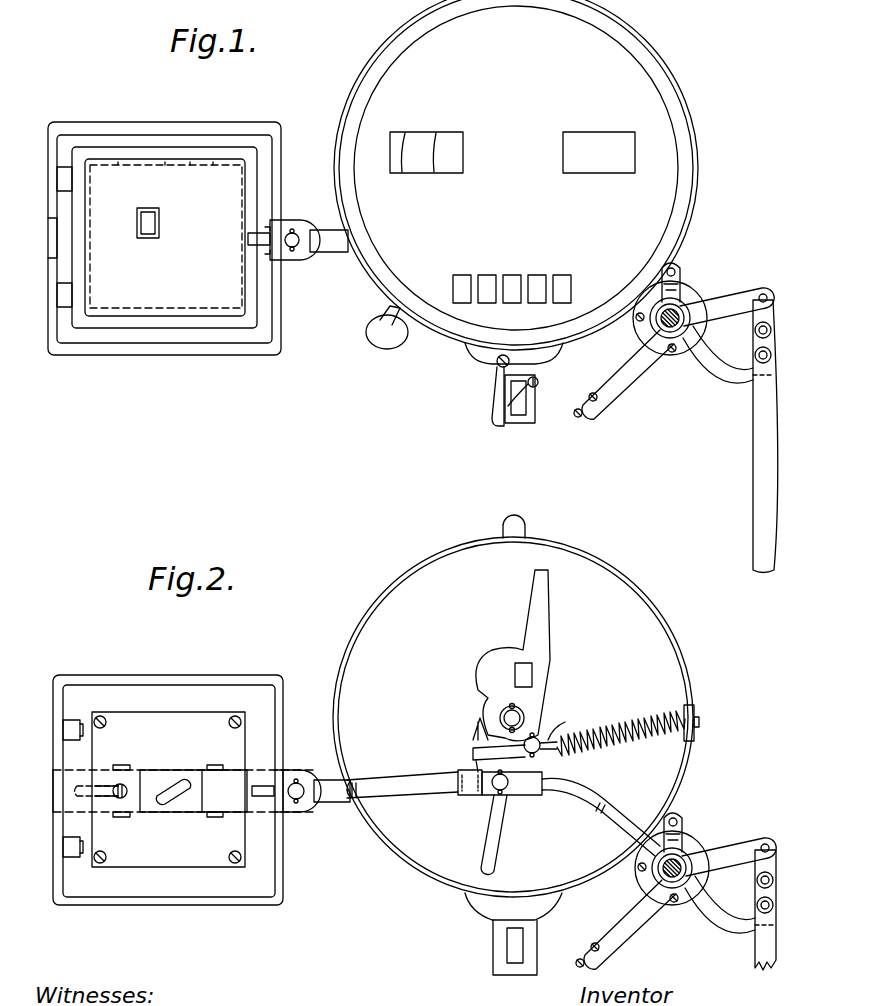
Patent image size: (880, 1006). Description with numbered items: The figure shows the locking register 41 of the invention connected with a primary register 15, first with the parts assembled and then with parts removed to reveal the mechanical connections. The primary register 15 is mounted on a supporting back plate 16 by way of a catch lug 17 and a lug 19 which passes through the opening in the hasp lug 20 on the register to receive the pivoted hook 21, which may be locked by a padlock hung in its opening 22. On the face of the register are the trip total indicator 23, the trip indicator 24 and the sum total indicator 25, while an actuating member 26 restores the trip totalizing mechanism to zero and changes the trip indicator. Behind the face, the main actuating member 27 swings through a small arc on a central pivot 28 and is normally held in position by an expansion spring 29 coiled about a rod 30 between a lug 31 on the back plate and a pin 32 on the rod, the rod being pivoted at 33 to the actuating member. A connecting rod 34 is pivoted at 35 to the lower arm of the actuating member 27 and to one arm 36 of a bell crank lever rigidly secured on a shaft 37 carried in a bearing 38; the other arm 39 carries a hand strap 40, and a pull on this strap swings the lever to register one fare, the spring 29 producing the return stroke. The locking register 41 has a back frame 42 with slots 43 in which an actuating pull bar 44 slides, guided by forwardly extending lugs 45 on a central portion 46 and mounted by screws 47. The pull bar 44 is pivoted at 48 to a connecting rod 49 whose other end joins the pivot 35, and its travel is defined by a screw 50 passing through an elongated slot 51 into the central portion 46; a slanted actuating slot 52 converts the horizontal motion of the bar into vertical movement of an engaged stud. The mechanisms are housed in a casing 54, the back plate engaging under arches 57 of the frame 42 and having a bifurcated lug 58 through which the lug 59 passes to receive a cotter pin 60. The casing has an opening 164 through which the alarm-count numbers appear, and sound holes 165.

In FIG. 1, the primary register 15 is at (644, 107).
In FIG. 1, the supporting back plate 16 is at (656, 54).
In FIG. 2, the supporting back plate 16 is at (631, 604).
In FIG. 2, the catch lug 17 is at (524, 527).
In FIG. 1, the lug 19 is at (528, 421).
In FIG. 2, the lug 19 is at (515, 955).
In FIG. 1, the hasp lug 20 is at (498, 424).
In FIG. 1, the pivoted hook 21 is at (497, 392).
In FIG. 1, the opening 22 is at (539, 382).
In FIG. 1, the trip total indicator 23 is at (430, 140).
In FIG. 1, the trip indicator 24 is at (592, 140).
In FIG. 1, the sum total indicator 25 is at (556, 274).
In FIG. 1, the actuating member 26 is at (400, 345).
In FIG. 2, the main actuating member 27 is at (525, 703).
In FIG. 2, the central pivot 28 is at (516, 718).
In FIG. 2, the expansion spring 29 is at (637, 740).
In FIG. 2, the rod 30 is at (548, 747).
In FIG. 2, the lug 31 is at (696, 714).
In FIG. 2, the pin 32 is at (565, 722).
In FIG. 2, the pivot 33 is at (520, 747).
In FIG. 2, the connecting rod 34 is at (577, 793).
In FIG. 2, the pivot 35 is at (506, 796).
In FIG. 1, the arm of bell crank lever 36 is at (677, 279).
In FIG. 2, the arm of bell crank lever 36 is at (682, 830).
In FIG. 1, the shaft 37 is at (690, 304).
In FIG. 2, the shaft 37 is at (700, 856).
In FIG. 1, the bearing 38 is at (676, 350).
In FIG. 2, the bearing 38 is at (675, 900).
In FIG. 1, the arm of bell crank lever 39 is at (746, 302).
In FIG. 2, the arm of bell crank lever 39 is at (752, 846).
In FIG. 1, the hand strap 40 is at (764, 455).
In FIG. 2, the hand strap 40 is at (754, 963).
In FIG. 1, the locking register 41 is at (152, 316).
In FIG. 2, the back frame 42 is at (230, 706).
In FIG. 1, the slots 43 is at (52, 234).
In FIG. 2, the slots 43 is at (56, 796).
In FIG. 2, the actuating pull bar 44 is at (190, 806).
In FIG. 2, the forwardly extending lugs 45 is at (215, 766).
In FIG. 2, the central portion 46 is at (170, 740).
In FIG. 2, the screws 47 is at (97, 716).
In FIG. 2, the pivot 48 is at (312, 800).
In FIG. 2, the connecting rod 49 is at (400, 792).
In FIG. 2, the screw 50 is at (122, 798).
In FIG. 2, the elongated slot 51 is at (100, 788).
In FIG. 2, the actuating slot 52 is at (165, 800).
In FIG. 1, the casing 54 is at (208, 268).
In FIG. 1, the arches 57 is at (64, 178).
In FIG. 2, the arches 57 is at (62, 731).
In FIG. 1, the bifurcated lug 58 is at (268, 252).
In FIG. 1, the lug 59 is at (274, 239).
In FIG. 2, the lug 59 is at (262, 796).
In FIG. 1, the cotter pin 60 is at (268, 230).
In FIG. 1, the opening 164 is at (146, 210).
In FIG. 1, the sound holes 165 is at (214, 160).